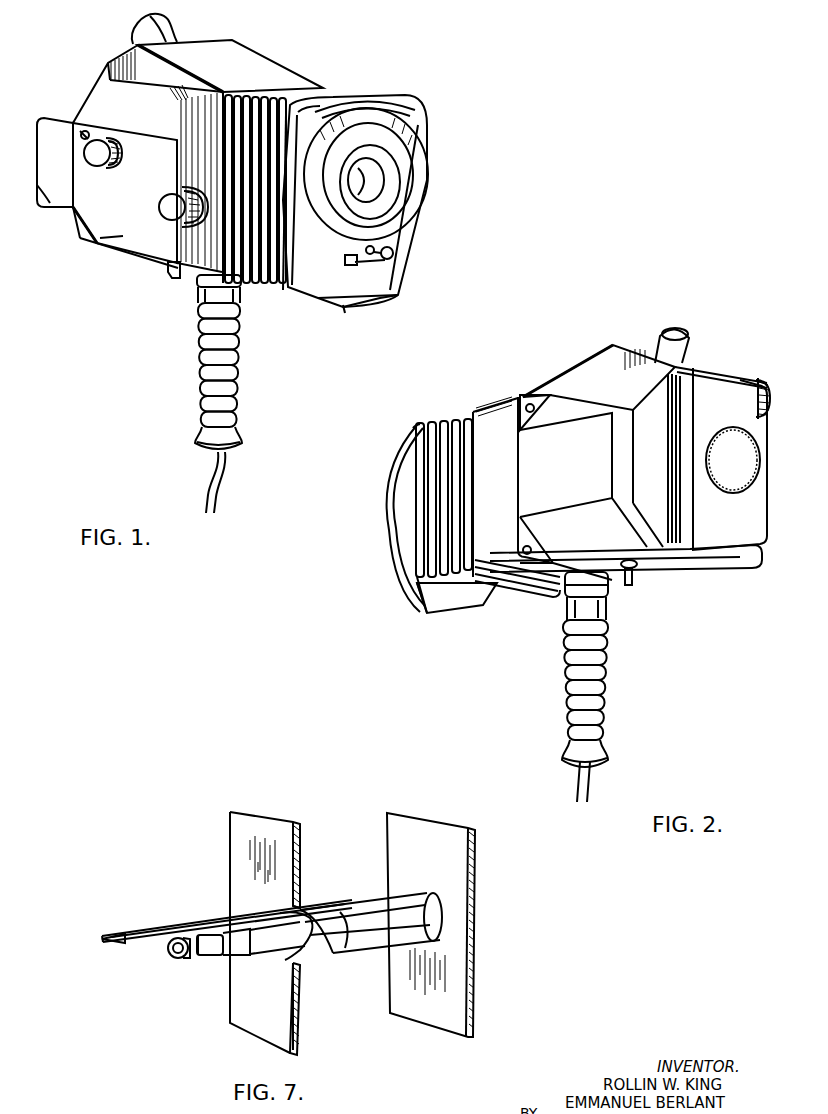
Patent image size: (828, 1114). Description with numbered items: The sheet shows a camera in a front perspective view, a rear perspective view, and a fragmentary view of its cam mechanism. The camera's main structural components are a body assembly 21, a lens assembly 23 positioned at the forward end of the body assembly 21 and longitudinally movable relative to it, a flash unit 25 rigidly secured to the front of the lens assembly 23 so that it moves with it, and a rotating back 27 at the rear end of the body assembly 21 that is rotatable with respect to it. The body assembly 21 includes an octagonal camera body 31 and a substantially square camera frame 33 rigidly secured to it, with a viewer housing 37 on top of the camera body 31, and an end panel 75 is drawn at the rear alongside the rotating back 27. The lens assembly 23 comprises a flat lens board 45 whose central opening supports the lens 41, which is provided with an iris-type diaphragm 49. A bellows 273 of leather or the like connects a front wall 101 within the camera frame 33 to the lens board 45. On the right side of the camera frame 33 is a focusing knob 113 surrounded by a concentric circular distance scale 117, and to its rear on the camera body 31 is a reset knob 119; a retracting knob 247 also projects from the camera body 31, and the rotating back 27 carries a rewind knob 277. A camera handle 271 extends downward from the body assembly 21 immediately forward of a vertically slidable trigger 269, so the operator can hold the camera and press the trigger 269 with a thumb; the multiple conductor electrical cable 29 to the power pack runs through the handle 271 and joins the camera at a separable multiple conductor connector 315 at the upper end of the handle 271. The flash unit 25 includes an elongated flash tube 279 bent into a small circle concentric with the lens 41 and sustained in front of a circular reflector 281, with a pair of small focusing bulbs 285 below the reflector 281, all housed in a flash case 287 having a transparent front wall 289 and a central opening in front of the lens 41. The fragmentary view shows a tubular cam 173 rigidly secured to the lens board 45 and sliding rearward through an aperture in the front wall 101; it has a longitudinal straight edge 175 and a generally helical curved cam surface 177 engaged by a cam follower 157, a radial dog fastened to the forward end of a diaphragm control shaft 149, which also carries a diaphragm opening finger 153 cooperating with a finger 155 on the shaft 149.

In FIG. 1, the body assembly 21 is at (145, 260).
In FIG. 2, the body assembly 21 is at (683, 571).
In FIG. 1, the lens assembly 23 is at (293, 290).
In FIG. 2, the lens assembly 23 is at (413, 428).
In FIG. 1, the flash unit 25 is at (367, 305).
In FIG. 2, the flash unit 25 is at (447, 616).
In FIG. 1, the rotating back 27 is at (80, 246).
In FIG. 2, the rotating back 27 is at (733, 565).
In FIG. 1, the multiple conductor electrical cable 29 is at (209, 490).
In FIG. 2, the multiple conductor electrical cable 29 is at (590, 780).
In FIG. 1, the camera body 31 is at (123, 238).
In FIG. 2, the camera body 31 is at (557, 543).
In FIG. 1, the camera frame 33 is at (191, 270).
In FIG. 2, the camera frame 33 is at (487, 420).
In FIG. 1, the viewer housing 37 is at (268, 73).
In FIG. 2, the viewer housing 37 is at (577, 377).
In FIG. 1, the lens 41 is at (345, 168).
In FIG. 1, the lens board 45 is at (305, 280).
In FIG. 2, the lens board 45 is at (412, 580).
In FIG. 7, the lens board 45 is at (458, 865).
In FIG. 1, the diaphragm 49 is at (357, 182).
In FIG. 1, the end panel 75 is at (50, 190).
In FIG. 2, the end panel 75 is at (715, 385).
In FIG. 1, the focusing knob 113 is at (173, 195).
In FIG. 1, the circular distance scale 117 is at (212, 220).
In FIG. 1, the reset knob 119 is at (78, 208).
In FIG. 1, the retracting knob 247 is at (83, 130).
In FIG. 1, the trigger 269 is at (173, 275).
In FIG. 2, the trigger 269 is at (627, 583).
In FIG. 1, the camera handle 271 is at (242, 367).
In FIG. 2, the camera handle 271 is at (600, 665).
In FIG. 1, the bellows 273 is at (252, 283).
In FIG. 2, the bellows 273 is at (455, 425).
In FIG. 2, the rewind knob 277 is at (760, 373).
In FIG. 1, the flash tube 279 is at (410, 107).
In FIG. 1, the reflector 281 is at (417, 203).
In FIG. 1, the focusing bulbs 285 is at (393, 252).
In FIG. 1, the flash case 287 is at (380, 295).
In FIG. 2, the flash case 287 is at (400, 495).
In FIG. 1, the transparent front wall 289 is at (347, 312).
In FIG. 1, the multiple conductor connector 315 is at (245, 287).
In FIG. 2, the multiple conductor connector 315 is at (612, 593).
In FIG. 7, the front wall 101 is at (243, 838).
In FIG. 7, the diaphragm control shaft 149 is at (227, 945).
In FIG. 7, the diaphragm opening finger 153 is at (200, 958).
In FIG. 7, the finger 155 is at (198, 937).
In FIG. 7, the cam follower 157 is at (307, 947).
In FIG. 7, the cam 173 is at (158, 923).
In FIG. 7, the straight edge 175 is at (142, 928).
In FIG. 7, the curved cam surface 177 is at (153, 947).